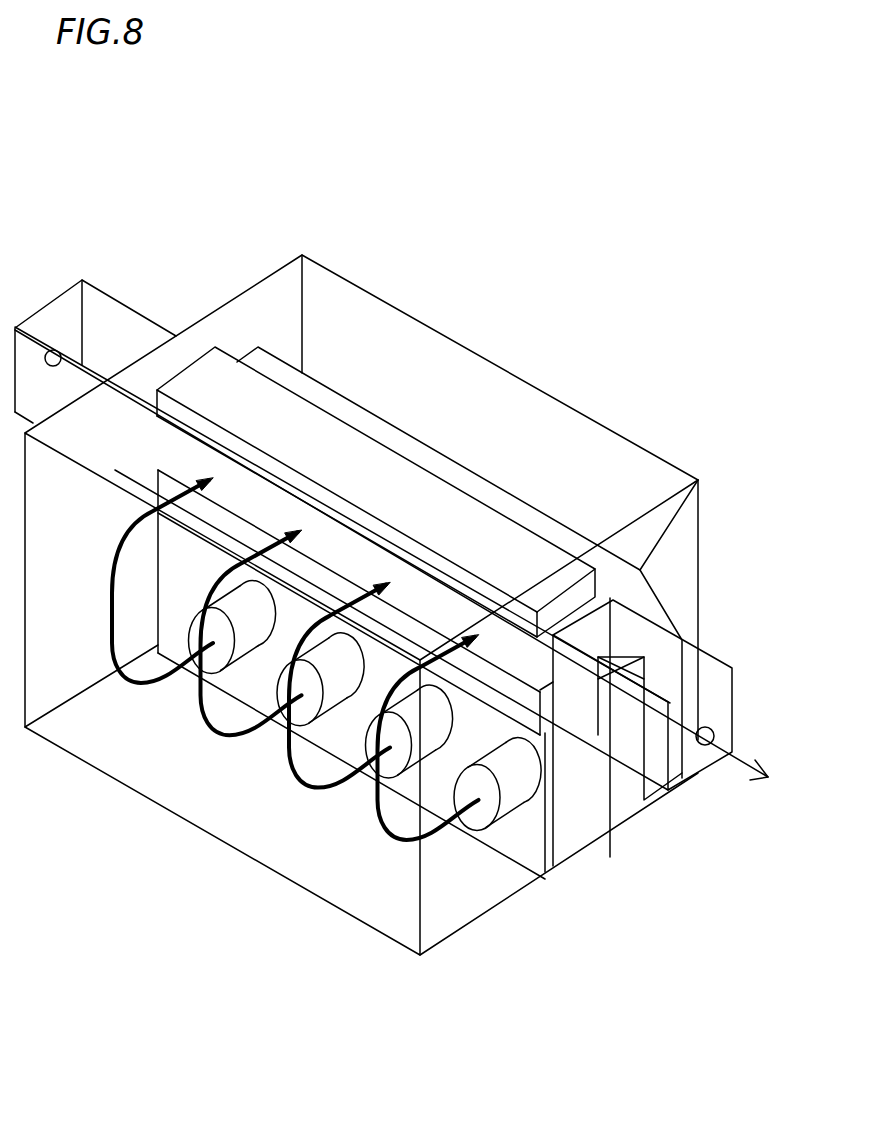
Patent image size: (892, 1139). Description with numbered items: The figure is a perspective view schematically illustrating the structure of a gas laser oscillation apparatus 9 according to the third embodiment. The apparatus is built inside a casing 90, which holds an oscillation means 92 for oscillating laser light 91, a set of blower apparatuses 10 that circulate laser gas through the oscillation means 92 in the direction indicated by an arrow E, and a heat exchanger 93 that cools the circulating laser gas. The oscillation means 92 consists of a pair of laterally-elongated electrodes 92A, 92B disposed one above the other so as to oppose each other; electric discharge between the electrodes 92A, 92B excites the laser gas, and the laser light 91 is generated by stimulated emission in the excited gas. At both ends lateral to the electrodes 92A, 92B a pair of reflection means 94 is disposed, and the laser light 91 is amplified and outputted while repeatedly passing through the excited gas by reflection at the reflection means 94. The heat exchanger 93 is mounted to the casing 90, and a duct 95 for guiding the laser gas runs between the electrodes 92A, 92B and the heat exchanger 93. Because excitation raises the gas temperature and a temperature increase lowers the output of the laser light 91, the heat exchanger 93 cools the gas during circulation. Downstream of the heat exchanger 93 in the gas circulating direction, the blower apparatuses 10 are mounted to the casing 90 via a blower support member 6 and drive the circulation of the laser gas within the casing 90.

The gas laser oscillation apparatus 9 is at (414, 228).
The casing 90 is at (222, 842).
The laser light 91 is at (749, 767).
The oscillation means 92 is at (398, 430).
The electrode 92A is at (528, 545).
The electrode 92B is at (430, 597).
The heat exchanger 93 is at (590, 807).
The reflection means 94 is at (123, 325).
The duct 95 is at (645, 615).
The blower apparatus 10 is at (500, 828).
The blower support member 6 is at (540, 857).
The arrow E is at (380, 838).